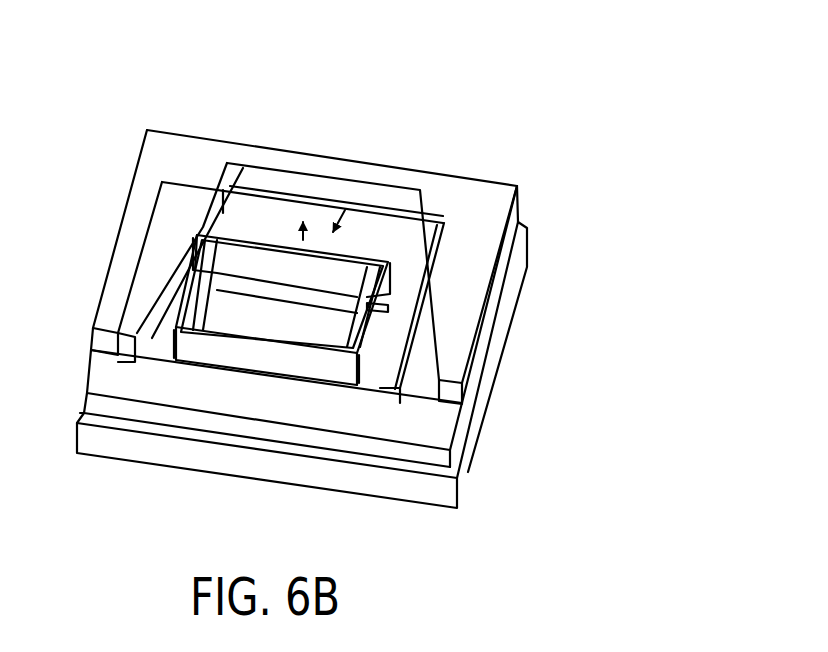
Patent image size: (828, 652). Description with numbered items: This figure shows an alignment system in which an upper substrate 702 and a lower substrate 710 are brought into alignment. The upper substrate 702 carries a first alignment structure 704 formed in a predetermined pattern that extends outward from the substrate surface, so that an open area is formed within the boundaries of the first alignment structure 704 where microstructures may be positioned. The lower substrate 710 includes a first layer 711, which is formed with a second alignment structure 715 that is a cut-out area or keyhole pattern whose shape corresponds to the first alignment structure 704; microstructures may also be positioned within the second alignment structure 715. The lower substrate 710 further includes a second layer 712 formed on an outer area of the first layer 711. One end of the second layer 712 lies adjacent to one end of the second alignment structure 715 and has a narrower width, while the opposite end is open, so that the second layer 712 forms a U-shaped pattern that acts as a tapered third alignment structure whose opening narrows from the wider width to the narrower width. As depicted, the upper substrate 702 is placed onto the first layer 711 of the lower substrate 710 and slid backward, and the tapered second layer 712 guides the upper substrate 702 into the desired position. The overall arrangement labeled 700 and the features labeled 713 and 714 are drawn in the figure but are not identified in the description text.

The sensor assembly 700 is at (273, 276).
The upper substrate 702 is at (185, 293).
The first alignment structure 704 is at (360, 247).
The lower substrate 710 is at (252, 480).
The first layer 711 is at (100, 377).
The second layer 712 is at (185, 150).
The plate 713 is at (312, 188).
The downward motion direction 714 is at (345, 210).
The second alignment structure 715 is at (253, 213).